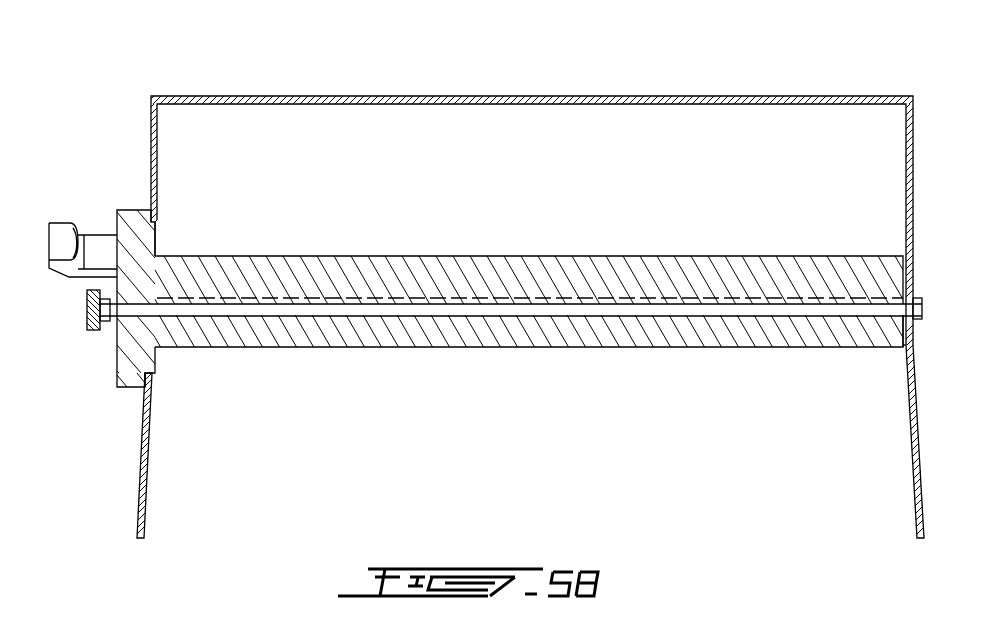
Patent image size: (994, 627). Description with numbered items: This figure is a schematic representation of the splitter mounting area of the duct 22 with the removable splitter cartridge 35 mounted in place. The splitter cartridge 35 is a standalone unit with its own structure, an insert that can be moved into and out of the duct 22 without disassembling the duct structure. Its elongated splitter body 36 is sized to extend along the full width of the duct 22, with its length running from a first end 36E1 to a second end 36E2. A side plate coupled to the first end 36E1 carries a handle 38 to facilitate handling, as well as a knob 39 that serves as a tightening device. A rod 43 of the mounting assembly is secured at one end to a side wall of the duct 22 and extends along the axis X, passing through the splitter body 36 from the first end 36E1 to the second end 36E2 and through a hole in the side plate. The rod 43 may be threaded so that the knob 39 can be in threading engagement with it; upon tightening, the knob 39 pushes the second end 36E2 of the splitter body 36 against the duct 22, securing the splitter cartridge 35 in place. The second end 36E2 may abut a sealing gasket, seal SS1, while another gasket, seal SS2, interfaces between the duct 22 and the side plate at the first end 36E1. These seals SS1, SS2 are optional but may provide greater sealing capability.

The duct 22 is at (908, 138).
The splitter cartridge 35 is at (100, 357).
The splitter body 36 is at (213, 330).
The first end 36E1 is at (172, 216).
The second end 36E2 is at (893, 360).
The handle 38 is at (57, 237).
The knob 39 is at (87, 301).
The rod 43 is at (912, 308).
The seal SS1 is at (905, 346).
The seal SS2 is at (143, 384).
The axis X is at (745, 298).